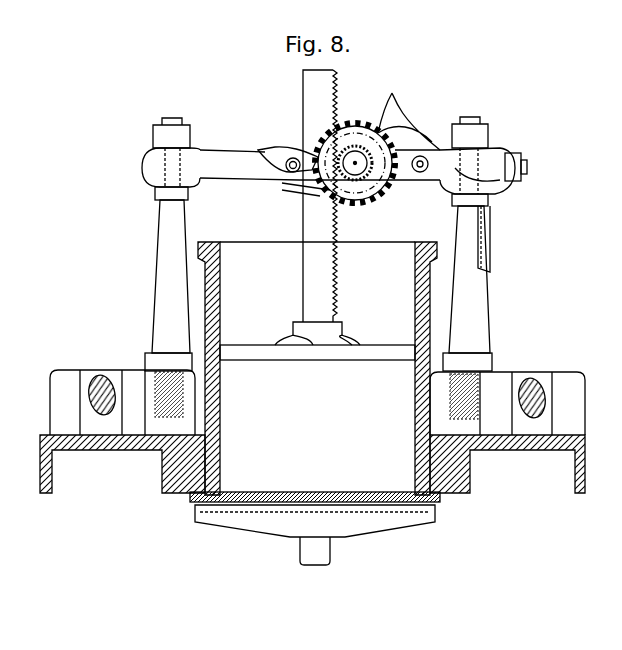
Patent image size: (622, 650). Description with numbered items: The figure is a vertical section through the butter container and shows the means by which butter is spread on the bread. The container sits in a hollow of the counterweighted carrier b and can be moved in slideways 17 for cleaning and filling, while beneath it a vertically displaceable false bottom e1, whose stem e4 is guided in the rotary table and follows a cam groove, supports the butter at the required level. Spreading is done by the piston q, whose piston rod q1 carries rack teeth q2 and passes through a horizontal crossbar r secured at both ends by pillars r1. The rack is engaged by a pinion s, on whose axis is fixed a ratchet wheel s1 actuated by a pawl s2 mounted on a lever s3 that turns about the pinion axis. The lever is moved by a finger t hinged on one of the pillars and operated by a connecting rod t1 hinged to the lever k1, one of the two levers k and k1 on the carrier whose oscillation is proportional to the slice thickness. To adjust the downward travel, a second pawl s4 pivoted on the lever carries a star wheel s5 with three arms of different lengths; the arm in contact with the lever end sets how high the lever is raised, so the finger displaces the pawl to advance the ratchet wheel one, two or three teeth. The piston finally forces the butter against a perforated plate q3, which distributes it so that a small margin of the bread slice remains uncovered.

The pinion s is at (358, 148).
The ratchet wheel s1 is at (365, 195).
The pawl s2 is at (405, 140).
The lever s3 is at (403, 172).
The second pawl s4 is at (300, 190).
The star wheel s5 is at (286, 148).
The horizontal crossbar r is at (430, 193).
The pillars r1 is at (318, 279).
The finger t is at (503, 189).
The connecting rod t1 is at (488, 240).
The piston q is at (362, 362).
The piston rod q1 is at (317, 207).
The rack teeth q2 is at (335, 292).
The perforated plate q3 is at (314, 500).
The lever k is at (102, 376).
The lever k1 is at (533, 378).
The carrier b is at (107, 450).
The slideways 17 is at (205, 453).
The false bottom e1 is at (255, 524).
The stem e4 is at (324, 555).